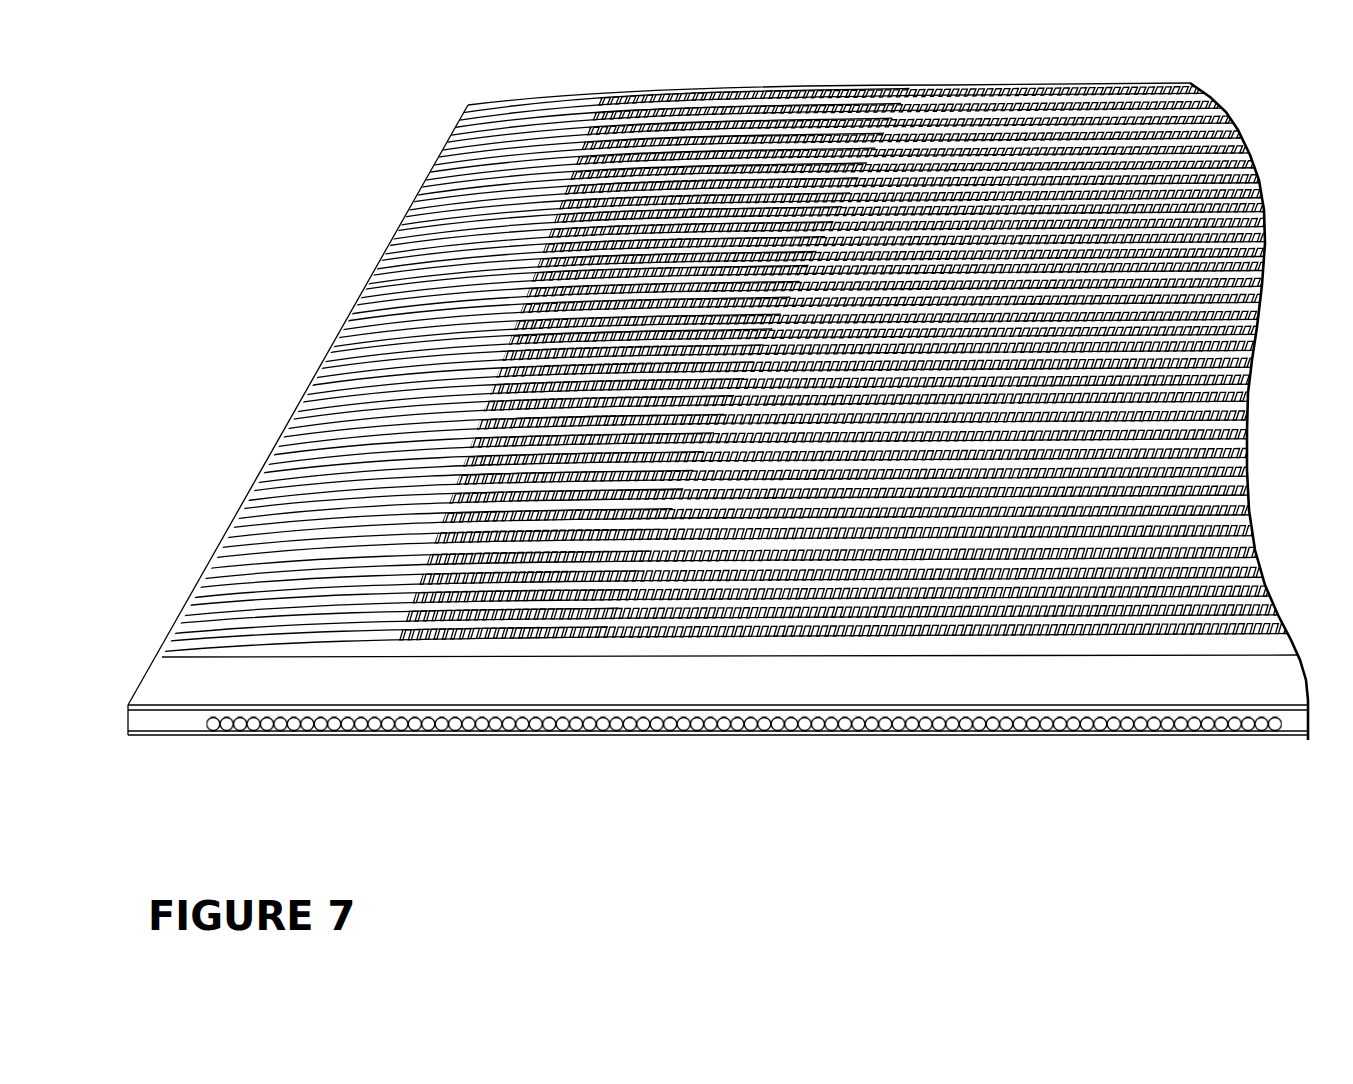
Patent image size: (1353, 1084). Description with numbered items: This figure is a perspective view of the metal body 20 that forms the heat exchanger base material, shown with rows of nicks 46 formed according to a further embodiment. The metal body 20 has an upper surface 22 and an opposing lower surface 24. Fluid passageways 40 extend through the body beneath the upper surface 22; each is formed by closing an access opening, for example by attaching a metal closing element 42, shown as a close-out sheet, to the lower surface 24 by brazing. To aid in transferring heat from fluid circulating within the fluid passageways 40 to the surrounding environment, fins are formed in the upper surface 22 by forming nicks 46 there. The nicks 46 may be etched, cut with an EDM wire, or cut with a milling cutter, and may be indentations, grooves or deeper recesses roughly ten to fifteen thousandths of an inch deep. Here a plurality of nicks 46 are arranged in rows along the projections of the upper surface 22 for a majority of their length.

The metal body 20 is at (152, 662).
The upper surface 22 is at (398, 637).
The lower surface 24 is at (197, 735).
The fluid passageway 40 is at (397, 738).
The metal closing element 42 is at (317, 735).
The nicks 46 is at (652, 268).